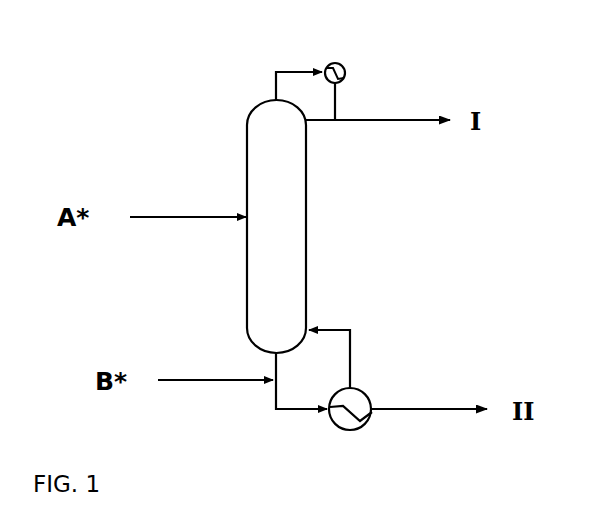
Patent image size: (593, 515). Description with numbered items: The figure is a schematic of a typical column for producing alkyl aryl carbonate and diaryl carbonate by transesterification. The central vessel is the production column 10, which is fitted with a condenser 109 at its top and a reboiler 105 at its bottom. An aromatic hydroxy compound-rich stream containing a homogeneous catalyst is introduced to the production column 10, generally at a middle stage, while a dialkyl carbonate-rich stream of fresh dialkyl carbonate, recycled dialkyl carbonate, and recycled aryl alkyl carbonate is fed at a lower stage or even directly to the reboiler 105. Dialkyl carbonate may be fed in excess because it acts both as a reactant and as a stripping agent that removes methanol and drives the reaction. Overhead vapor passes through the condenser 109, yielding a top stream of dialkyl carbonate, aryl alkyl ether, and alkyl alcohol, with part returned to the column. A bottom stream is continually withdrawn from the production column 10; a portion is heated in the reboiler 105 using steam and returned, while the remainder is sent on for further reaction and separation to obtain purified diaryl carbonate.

The production column 10 is at (276, 226).
The reboiler 105 is at (375, 385).
The condenser 109 is at (360, 58).